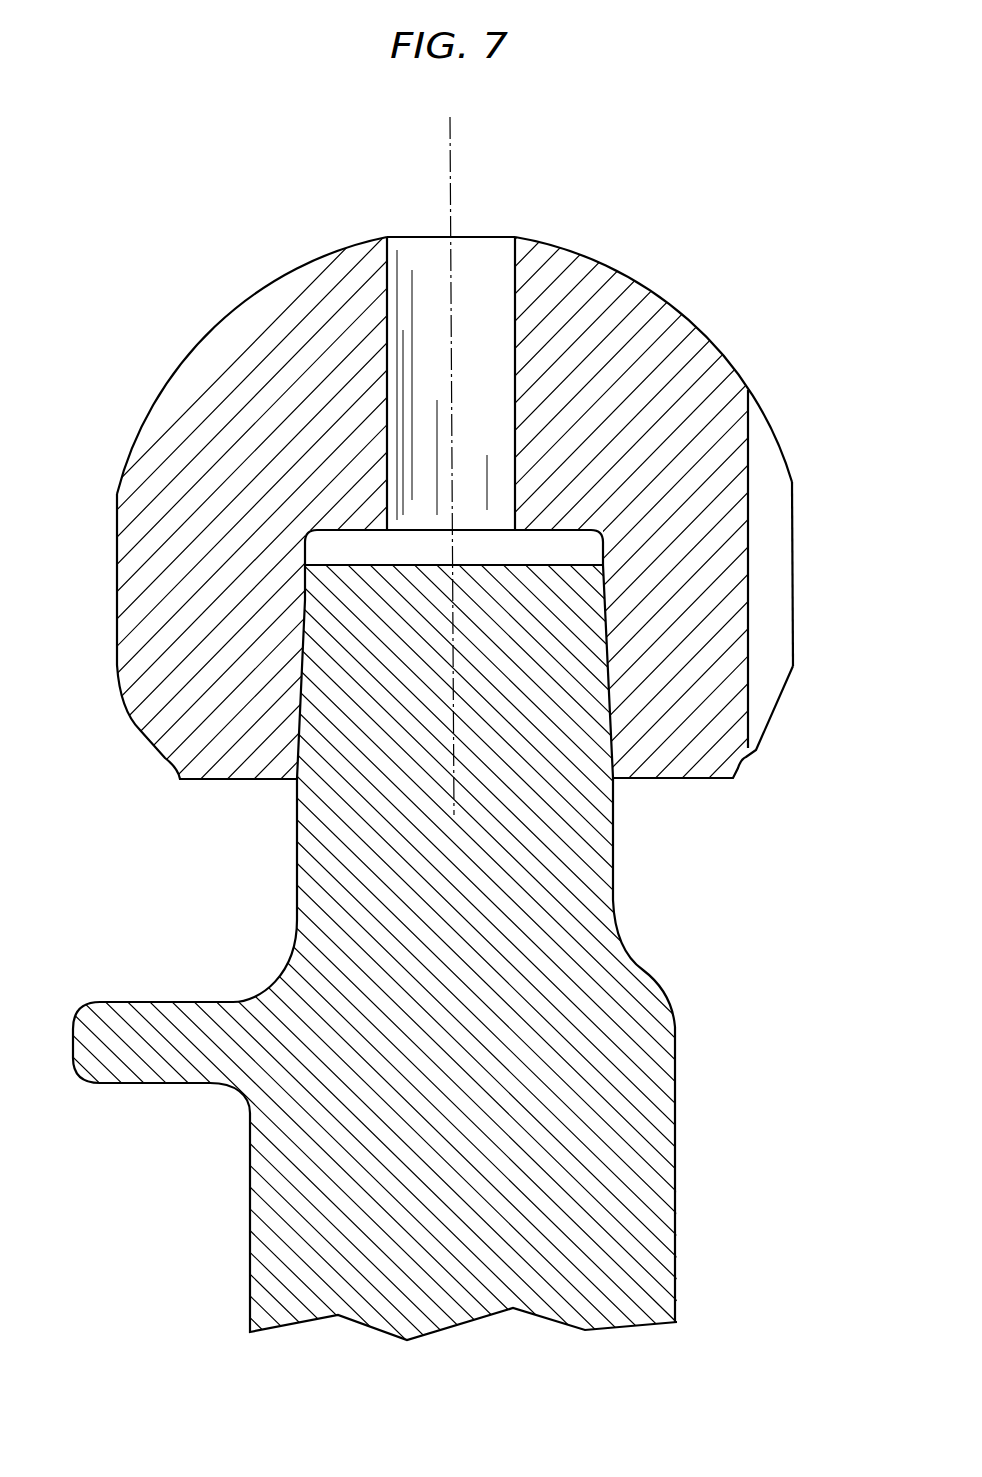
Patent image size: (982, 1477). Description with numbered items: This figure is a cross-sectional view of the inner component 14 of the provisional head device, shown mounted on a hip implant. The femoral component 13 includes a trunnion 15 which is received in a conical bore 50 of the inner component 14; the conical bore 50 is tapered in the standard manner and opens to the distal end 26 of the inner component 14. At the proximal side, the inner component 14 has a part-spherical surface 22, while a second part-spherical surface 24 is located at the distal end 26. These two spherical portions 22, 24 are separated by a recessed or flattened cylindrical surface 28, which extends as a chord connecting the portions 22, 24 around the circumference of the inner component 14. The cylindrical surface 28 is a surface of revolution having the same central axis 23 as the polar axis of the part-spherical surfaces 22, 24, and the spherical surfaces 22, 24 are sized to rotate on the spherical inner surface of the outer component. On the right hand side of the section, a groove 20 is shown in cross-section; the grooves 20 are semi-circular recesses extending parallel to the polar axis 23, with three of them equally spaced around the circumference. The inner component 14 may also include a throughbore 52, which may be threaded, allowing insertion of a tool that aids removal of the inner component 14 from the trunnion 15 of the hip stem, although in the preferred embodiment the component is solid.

The femoral component 13 is at (160, 1001).
The inner component 14 is at (690, 320).
The trunnion 15 is at (539, 694).
The groove 20 is at (795, 508).
The part-spherical surface 22 is at (228, 305).
The polar axis 23 is at (449, 140).
The second part-spherical surface 24 is at (140, 735).
The distal end 26 is at (672, 780).
The cylindrical surface 28 is at (115, 536).
The conical bore 50 is at (306, 606).
The throughbore 52 is at (487, 236).